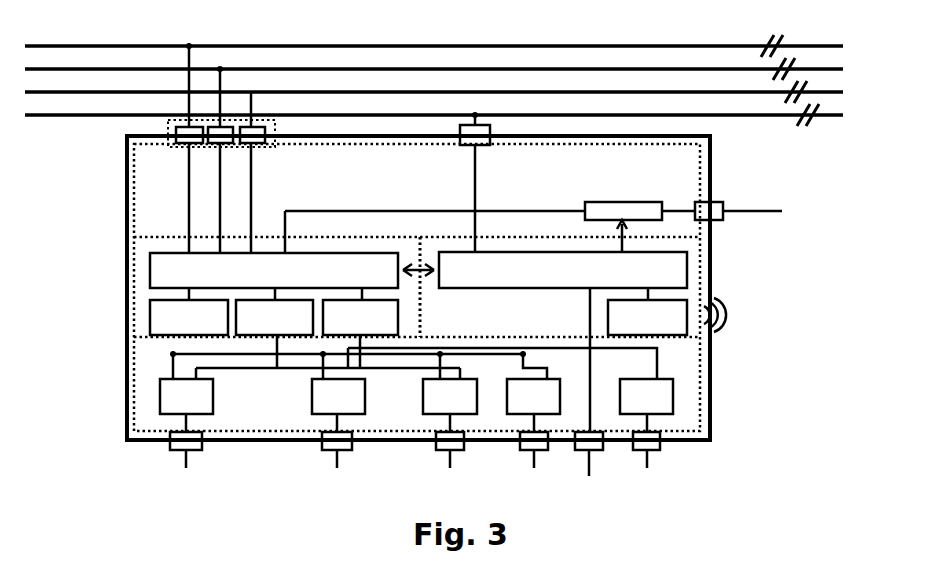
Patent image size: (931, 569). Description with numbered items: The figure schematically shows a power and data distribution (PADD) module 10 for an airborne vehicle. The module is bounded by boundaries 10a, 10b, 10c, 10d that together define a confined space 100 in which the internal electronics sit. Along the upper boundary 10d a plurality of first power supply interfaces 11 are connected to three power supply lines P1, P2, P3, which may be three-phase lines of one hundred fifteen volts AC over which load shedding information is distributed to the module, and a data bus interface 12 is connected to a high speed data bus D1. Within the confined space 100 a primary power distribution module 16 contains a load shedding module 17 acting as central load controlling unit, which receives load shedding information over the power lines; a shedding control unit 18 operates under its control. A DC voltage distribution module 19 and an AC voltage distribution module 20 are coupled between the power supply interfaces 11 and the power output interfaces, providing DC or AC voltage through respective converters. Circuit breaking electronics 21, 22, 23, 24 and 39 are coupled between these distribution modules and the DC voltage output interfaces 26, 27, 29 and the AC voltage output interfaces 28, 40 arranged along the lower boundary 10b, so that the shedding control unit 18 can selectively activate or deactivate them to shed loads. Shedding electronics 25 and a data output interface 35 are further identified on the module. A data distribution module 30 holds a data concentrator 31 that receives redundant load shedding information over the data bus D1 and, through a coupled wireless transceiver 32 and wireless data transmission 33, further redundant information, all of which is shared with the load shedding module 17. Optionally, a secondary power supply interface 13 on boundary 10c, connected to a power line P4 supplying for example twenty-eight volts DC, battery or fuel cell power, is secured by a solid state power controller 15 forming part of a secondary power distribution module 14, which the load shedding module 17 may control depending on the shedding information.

The power supply line P1 is at (434, 28).
The power supply line P2 is at (434, 49).
The power supply line P3 is at (434, 113).
The data bus D1 is at (434, 138).
The power line P4 is at (752, 234).
The power and data distribution module 10 is at (395, 288).
The boundary 10a is at (127, 424).
The boundary 10b is at (262, 440).
The boundary 10c is at (711, 384).
The boundary 10d is at (660, 136).
The confined space 100 is at (718, 436).
The first power supply interfaces 11 is at (213, 149).
The data bus interface 12 is at (466, 183).
The secondary power supply interface 13 is at (703, 189).
The secondary power distribution module 14 is at (737, 148).
The solid state power controller 15 is at (475, 206).
The primary power distribution module 16 is at (111, 290).
The load shedding module 17 is at (243, 271).
The shedding control unit 18 is at (241, 320).
The DC voltage distribution module 19 is at (413, 373).
The AC voltage distribution module 20 is at (404, 372).
The circuit breaking electronics 21 is at (207, 396).
The circuit breaking electronics 22 is at (358, 406).
The circuit breaking electronics 23 is at (435, 428).
The circuit breaking electronics 24 is at (661, 430).
The shedding electronics 25 is at (105, 393).
The DC voltage output interface 26 is at (177, 456).
The DC voltage output interface 27 is at (328, 456).
The AC voltage output interface 28 is at (442, 456).
The DC voltage output interface 29 is at (636, 456).
The data distribution module 30 is at (448, 287).
The data concentrator 31 is at (563, 342).
The wireless transceiver 32 is at (607, 315).
The wireless data transmission 33 is at (732, 325).
The data output interface 35 is at (580, 465).
The circuit breaking electronics 39 is at (519, 430).
The AC voltage output interface 40 is at (525, 456).